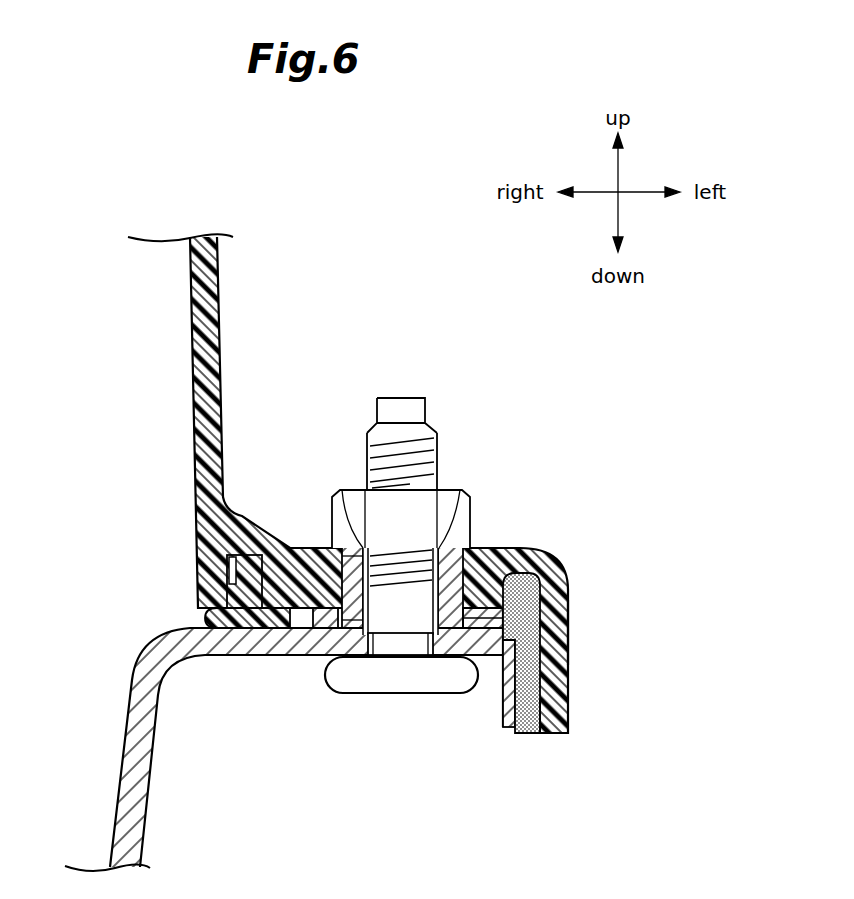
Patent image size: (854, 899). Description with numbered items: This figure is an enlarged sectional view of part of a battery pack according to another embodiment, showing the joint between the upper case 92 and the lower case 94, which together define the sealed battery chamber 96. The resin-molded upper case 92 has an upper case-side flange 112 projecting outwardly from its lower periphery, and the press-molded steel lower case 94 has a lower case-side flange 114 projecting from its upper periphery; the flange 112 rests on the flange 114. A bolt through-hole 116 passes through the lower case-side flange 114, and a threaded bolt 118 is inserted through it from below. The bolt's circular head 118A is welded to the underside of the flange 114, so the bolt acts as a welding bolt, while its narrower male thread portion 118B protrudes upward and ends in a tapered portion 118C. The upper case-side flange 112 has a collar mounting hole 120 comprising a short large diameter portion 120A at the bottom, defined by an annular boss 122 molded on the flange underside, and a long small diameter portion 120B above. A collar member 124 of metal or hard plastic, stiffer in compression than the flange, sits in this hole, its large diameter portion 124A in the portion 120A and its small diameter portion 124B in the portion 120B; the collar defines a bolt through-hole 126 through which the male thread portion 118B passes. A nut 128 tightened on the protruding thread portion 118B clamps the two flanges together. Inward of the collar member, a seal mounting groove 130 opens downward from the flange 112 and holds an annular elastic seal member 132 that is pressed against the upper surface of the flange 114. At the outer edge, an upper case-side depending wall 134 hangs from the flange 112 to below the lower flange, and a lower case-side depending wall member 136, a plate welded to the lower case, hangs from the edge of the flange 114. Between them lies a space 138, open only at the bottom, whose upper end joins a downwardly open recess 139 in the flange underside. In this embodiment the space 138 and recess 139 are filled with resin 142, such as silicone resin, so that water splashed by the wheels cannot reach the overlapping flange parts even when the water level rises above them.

The upper case 92 is at (212, 304).
The lower case 94 is at (138, 811).
The battery chamber 96 is at (160, 448).
The upper case-side flange 112 is at (480, 547).
The lower case-side flange 114 is at (278, 648).
The bolt through-hole 116 is at (425, 690).
The threaded bolt 118 is at (385, 440).
The circular head 118A is at (458, 660).
The male thread portion 118B is at (437, 448).
The tapered portion 118C is at (413, 427).
The collar mounting hole 120 is at (362, 575).
The large diameter portion 120A is at (351, 640).
The small diameter portion 120B is at (356, 545).
The annular boss 122 is at (312, 640).
The collar member 124 is at (507, 570).
The large diameter portion 124A is at (482, 665).
The small diameter portion 124B is at (545, 585).
The bolt through-hole 126 is at (425, 570).
The nut 128 is at (475, 505).
The seal mounting groove 130 is at (227, 590).
The seal member 132 is at (235, 630).
The upper case-side depending wall 134 is at (566, 612).
The lower case-side depending wall member 136 is at (556, 680).
The space 138 is at (536, 708).
The recess 139 is at (566, 632).
The resin 142 is at (555, 655).